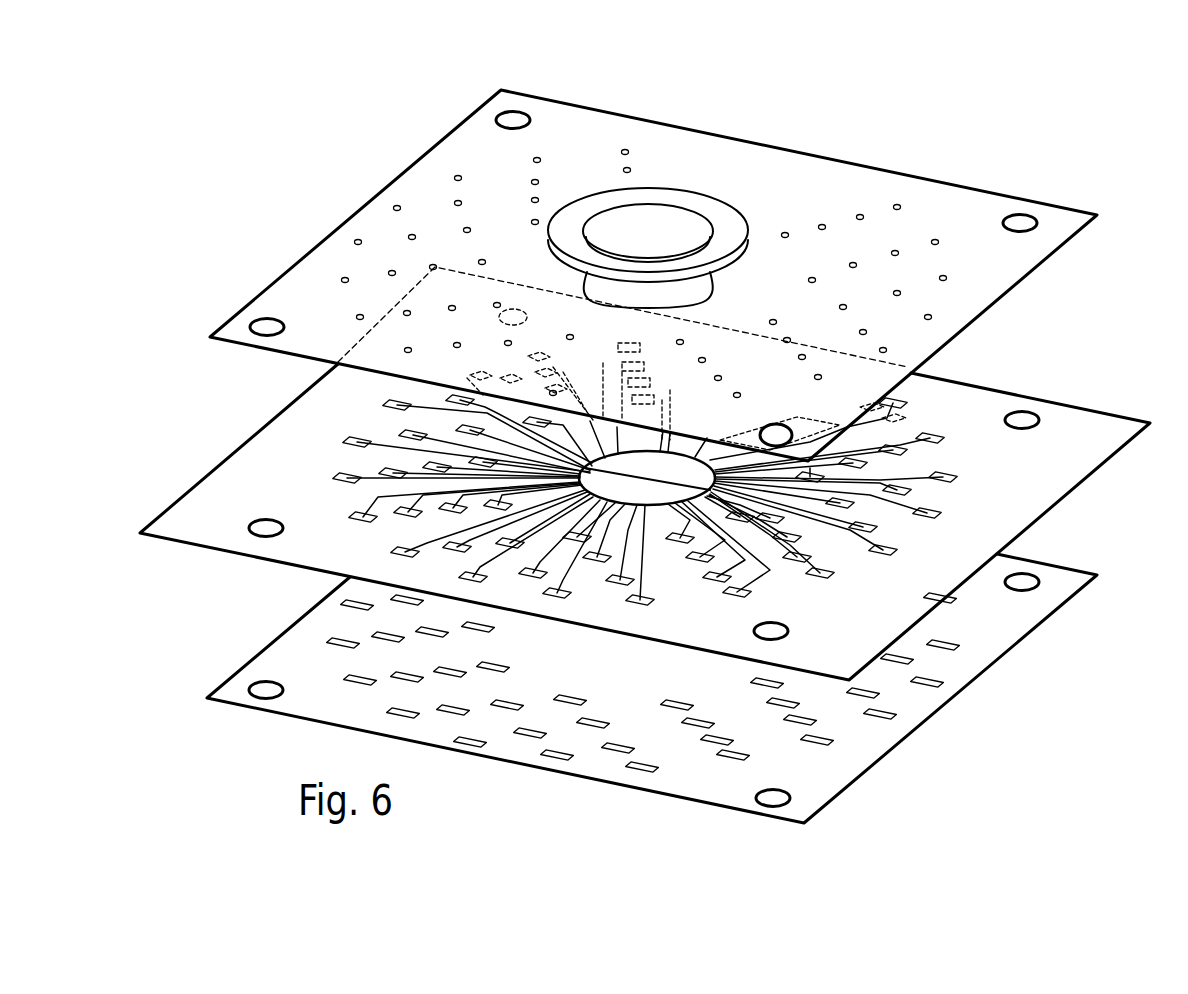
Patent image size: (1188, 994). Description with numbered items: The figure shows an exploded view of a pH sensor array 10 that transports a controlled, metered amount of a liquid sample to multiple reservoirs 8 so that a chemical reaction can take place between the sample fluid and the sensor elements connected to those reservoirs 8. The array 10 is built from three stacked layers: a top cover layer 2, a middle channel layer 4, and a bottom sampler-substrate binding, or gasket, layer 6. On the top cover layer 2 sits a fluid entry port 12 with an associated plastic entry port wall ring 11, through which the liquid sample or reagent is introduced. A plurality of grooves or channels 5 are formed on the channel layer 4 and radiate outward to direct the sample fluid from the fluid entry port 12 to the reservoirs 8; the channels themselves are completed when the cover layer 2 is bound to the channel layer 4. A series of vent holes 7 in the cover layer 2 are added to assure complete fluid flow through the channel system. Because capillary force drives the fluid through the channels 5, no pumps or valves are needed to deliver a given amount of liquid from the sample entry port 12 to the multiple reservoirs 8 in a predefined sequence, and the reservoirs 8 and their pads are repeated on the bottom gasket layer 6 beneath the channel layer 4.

The pH sensor array 10 is at (848, 134).
The top cover layer 2 is at (977, 188).
The middle channel layer 4 is at (1090, 403).
The grooves or channels 5 is at (843, 533).
The bottom sampler-substrate binding (gasket) layer 6 is at (1070, 568).
The vent holes 7 is at (537, 158).
The reservoirs 8 is at (652, 602).
The plastic entry port wall ring 11 is at (723, 218).
The fluid entry port 12 is at (680, 293).